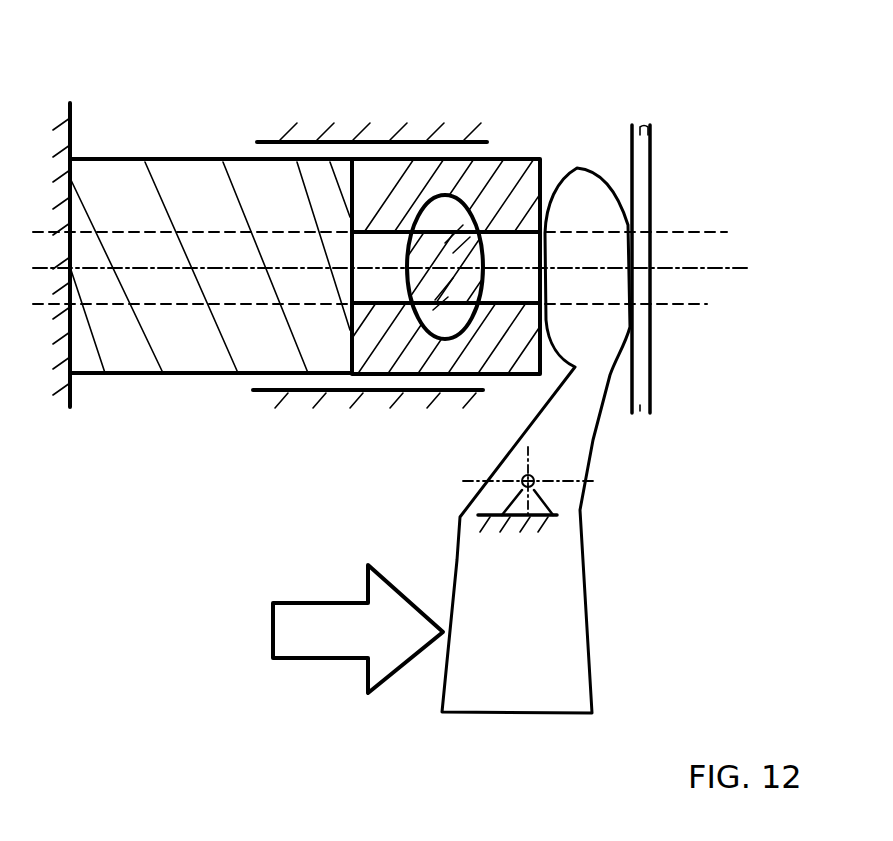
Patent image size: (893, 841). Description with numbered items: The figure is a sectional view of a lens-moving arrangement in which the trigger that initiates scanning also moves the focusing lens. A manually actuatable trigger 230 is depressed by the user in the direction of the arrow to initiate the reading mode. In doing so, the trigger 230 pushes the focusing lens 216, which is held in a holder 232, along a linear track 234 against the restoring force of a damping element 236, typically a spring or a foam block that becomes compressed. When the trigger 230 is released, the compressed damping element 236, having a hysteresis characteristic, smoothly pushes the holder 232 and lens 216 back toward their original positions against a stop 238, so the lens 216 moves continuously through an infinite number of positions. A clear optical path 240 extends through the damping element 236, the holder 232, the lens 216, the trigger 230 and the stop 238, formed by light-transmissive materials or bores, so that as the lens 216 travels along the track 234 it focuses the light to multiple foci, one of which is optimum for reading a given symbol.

The focusing lens 216 is at (460, 230).
The manually actuatable trigger 230 is at (593, 453).
The holder 232 is at (510, 170).
The linear track 234 is at (268, 147).
The damping element 236 is at (219, 140).
The stop 238 is at (643, 185).
The clear optical path 240 is at (693, 232).